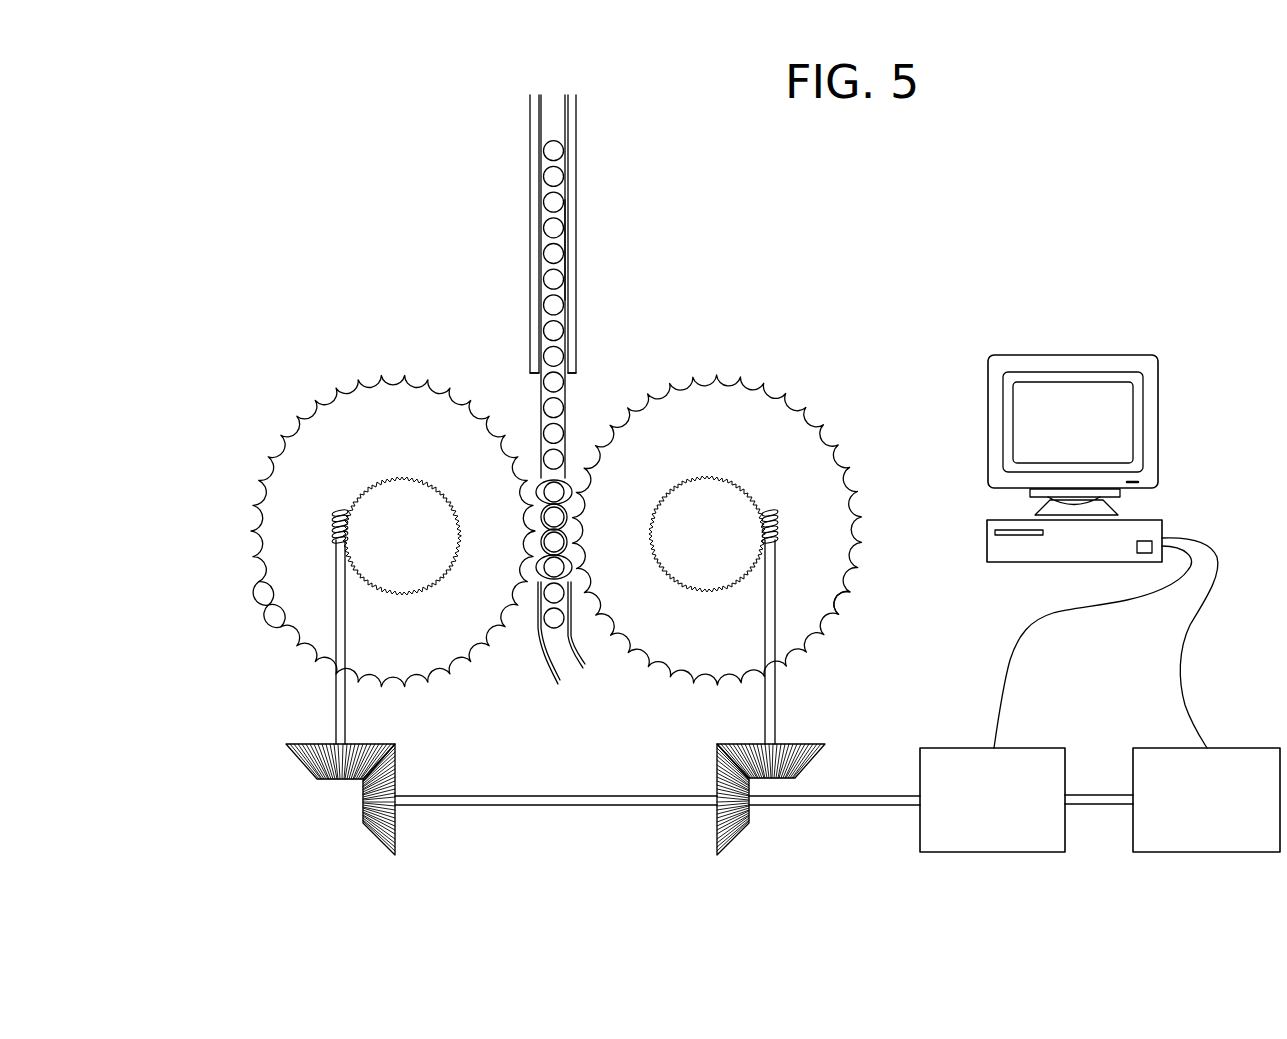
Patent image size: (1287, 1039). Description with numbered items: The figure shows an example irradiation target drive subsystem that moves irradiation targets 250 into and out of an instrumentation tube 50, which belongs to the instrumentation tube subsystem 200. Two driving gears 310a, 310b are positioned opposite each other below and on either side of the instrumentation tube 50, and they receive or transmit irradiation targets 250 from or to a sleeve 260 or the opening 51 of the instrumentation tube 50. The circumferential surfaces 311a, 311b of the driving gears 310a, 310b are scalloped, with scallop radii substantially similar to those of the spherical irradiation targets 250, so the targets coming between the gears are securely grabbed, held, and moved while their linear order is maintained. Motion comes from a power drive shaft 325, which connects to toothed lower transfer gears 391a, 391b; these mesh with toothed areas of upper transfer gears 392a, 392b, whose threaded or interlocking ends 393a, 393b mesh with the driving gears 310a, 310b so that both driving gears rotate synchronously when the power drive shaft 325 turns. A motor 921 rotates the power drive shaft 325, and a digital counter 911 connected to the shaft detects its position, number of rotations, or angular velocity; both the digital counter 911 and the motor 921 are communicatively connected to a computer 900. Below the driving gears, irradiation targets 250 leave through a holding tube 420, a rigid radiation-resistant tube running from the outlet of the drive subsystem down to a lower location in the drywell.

The instrumentation tube subsystem 200 is at (528, 140).
The irradiation target 250 is at (554, 228).
The sleeve 260 is at (569, 268).
The instrumentation tube 50 is at (577, 328).
The opening 51 is at (578, 382).
The driving gear 310a is at (733, 412).
The driving gear 310b is at (410, 408).
The circumferential surface 311a is at (840, 583).
The circumferential surface 311b is at (277, 607).
The threaded end 393a is at (778, 528).
The threaded end 393b is at (333, 533).
The upper transfer gear 392a is at (808, 762).
The upper transfer gear 392b is at (367, 744).
The lower transfer gear 391a is at (717, 772).
The lower transfer gear 391b is at (397, 832).
The power drive shaft 325 is at (866, 800).
The holding tube 420 is at (586, 654).
The computer 900 is at (1122, 400).
The digital counter 911 is at (975, 840).
The motor 921 is at (1190, 837).